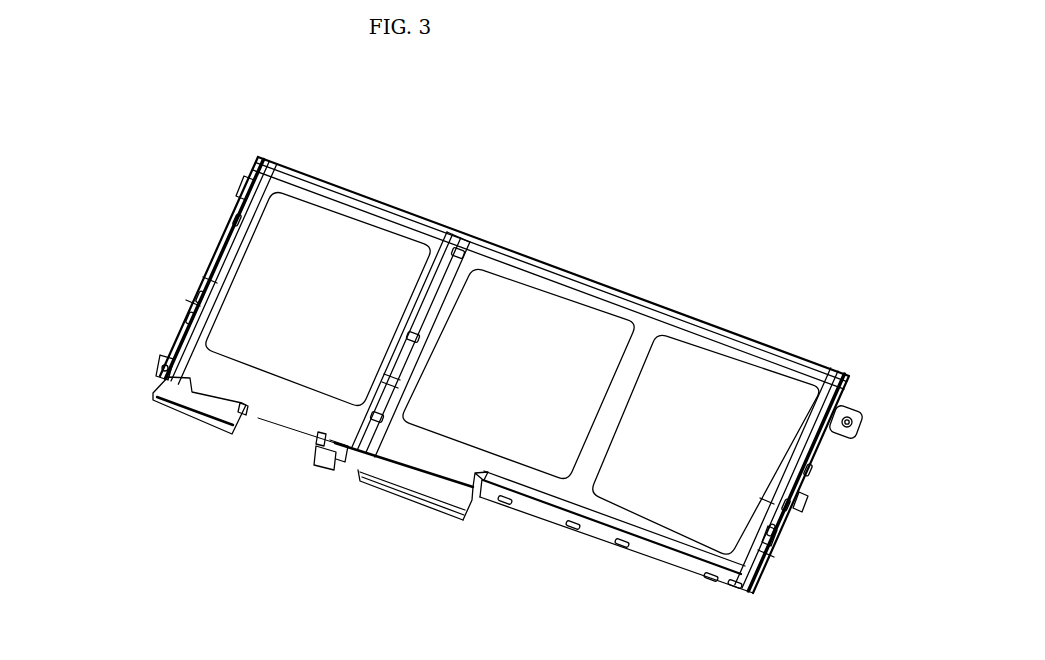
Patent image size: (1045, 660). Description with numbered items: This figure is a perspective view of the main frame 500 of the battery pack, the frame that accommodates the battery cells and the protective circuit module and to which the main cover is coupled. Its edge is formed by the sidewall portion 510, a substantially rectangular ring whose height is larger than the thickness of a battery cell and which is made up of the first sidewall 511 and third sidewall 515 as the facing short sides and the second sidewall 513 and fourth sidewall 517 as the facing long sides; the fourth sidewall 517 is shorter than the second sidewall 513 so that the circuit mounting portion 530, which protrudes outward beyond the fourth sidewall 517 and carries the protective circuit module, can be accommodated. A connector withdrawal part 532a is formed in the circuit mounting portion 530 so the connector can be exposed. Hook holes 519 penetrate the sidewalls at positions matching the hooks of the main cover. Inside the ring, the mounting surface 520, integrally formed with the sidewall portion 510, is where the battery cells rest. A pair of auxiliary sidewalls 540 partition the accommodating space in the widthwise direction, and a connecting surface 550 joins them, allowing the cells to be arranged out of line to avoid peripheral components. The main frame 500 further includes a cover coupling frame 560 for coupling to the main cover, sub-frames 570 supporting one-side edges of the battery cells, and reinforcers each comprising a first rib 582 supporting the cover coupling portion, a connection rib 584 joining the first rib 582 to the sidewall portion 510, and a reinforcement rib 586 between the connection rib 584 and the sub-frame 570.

The main frame 500 is at (734, 310).
The sidewall portion 510 is at (189, 69).
The first sidewall 511 is at (233, 240).
The second sidewall 513 is at (343, 186).
The third sidewall 515 is at (814, 468).
The fourth sidewall 517 is at (660, 553).
The hook holes 519 is at (608, 545).
The mounting surface 520 is at (630, 350).
The circuit mounting portion 530 is at (360, 486).
The connector withdrawal part 532a is at (290, 437).
The auxiliary sidewall 540 is at (452, 302).
The connecting surface 550 is at (396, 382).
The cover coupling frame 560 is at (462, 272).
The sub-frame 570 is at (195, 328).
The first rib 582 is at (248, 180).
The connection rib 584 is at (195, 305).
The reinforcement rib 586 is at (210, 280).